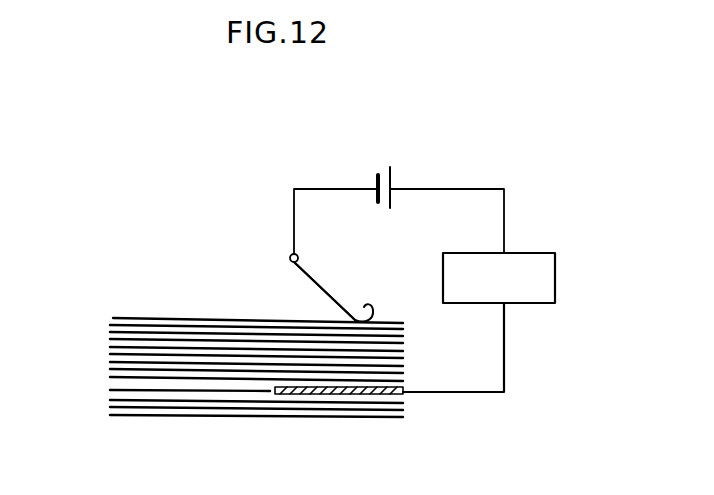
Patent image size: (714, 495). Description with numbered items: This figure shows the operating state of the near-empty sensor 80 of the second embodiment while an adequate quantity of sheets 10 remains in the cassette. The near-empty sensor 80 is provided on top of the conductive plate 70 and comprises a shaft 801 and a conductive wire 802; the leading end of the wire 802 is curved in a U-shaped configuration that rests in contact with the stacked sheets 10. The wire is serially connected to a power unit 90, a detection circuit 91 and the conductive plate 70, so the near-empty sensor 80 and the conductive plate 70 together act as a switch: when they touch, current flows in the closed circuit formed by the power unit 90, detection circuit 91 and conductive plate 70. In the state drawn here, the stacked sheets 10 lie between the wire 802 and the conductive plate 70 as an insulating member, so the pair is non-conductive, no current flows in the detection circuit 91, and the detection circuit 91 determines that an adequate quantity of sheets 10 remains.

The sheets 10 is at (172, 318).
The conductive plate 70 is at (403, 393).
The near-empty sensor 80 is at (278, 288).
The shaft 801 is at (294, 254).
The wire 802 is at (327, 288).
The power unit 90 is at (392, 175).
The detection circuit 91 is at (557, 272).